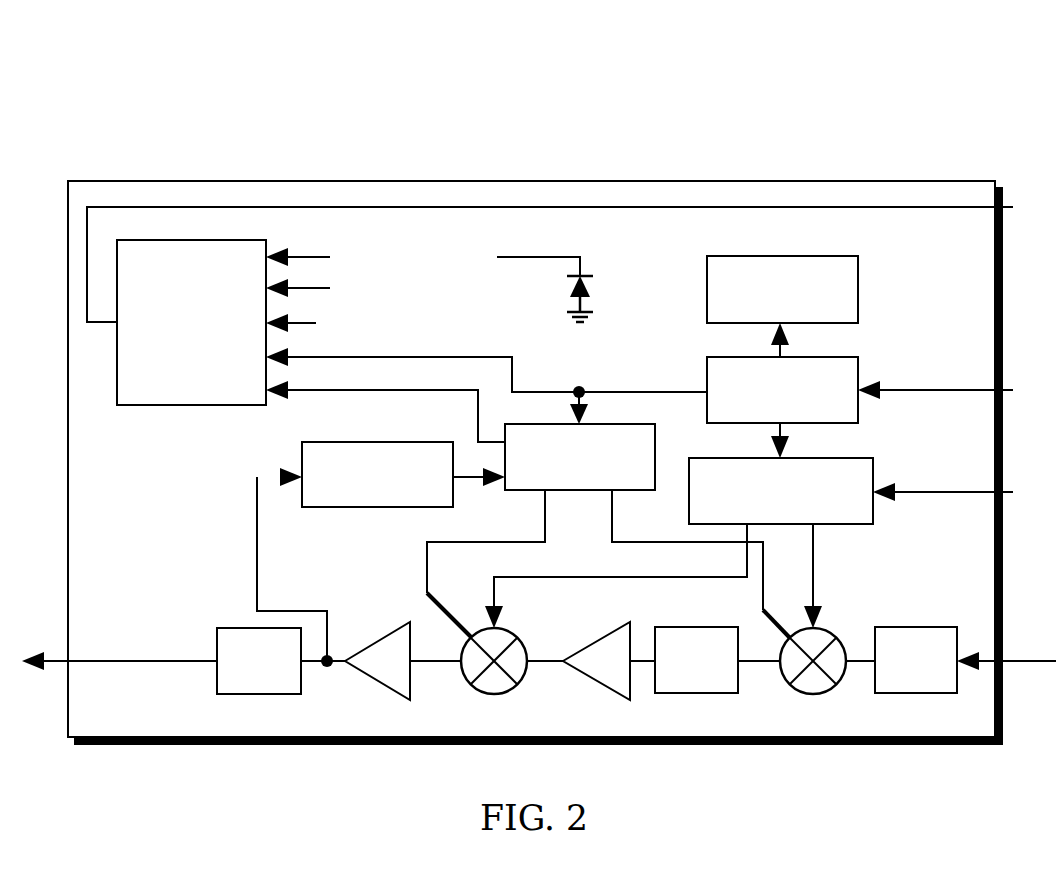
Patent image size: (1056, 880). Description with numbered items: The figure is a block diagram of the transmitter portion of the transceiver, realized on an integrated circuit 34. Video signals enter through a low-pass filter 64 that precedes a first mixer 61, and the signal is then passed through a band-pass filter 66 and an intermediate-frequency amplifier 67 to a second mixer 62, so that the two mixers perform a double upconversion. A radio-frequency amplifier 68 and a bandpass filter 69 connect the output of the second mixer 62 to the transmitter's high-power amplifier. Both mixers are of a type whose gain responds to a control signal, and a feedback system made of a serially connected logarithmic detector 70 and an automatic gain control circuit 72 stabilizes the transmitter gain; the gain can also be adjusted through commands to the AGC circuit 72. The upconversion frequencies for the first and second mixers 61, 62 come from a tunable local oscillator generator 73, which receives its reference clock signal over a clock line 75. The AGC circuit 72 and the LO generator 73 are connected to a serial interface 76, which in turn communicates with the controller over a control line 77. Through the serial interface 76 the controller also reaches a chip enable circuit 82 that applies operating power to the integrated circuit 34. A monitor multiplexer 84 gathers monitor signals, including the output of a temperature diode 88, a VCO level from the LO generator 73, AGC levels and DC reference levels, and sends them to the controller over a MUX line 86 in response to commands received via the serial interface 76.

The integrated circuit 34 is at (195, 190).
The first mixer 61 is at (808, 694).
The second mixer 62 is at (490, 694).
The low-pass filter 64 is at (903, 627).
The band-pass filter 66 is at (723, 627).
The intermediate-frequency amplifier 67 is at (610, 634).
The radio-frequency amplifier 68 is at (382, 636).
The bandpass filter 69 is at (228, 628).
The logarithmic detector 70 is at (302, 448).
The automatic gain control circuit 72 is at (582, 490).
The local oscillator generator 73 is at (845, 524).
The clock line 75 is at (1055, 492).
The serial interface 76 is at (858, 368).
The control line 77 is at (1055, 390).
The chip enable circuit 82 is at (858, 280).
The monitor multiplexer 84 is at (178, 405).
The MUX line 86 is at (1055, 207).
The temperature diode 88 is at (592, 286).